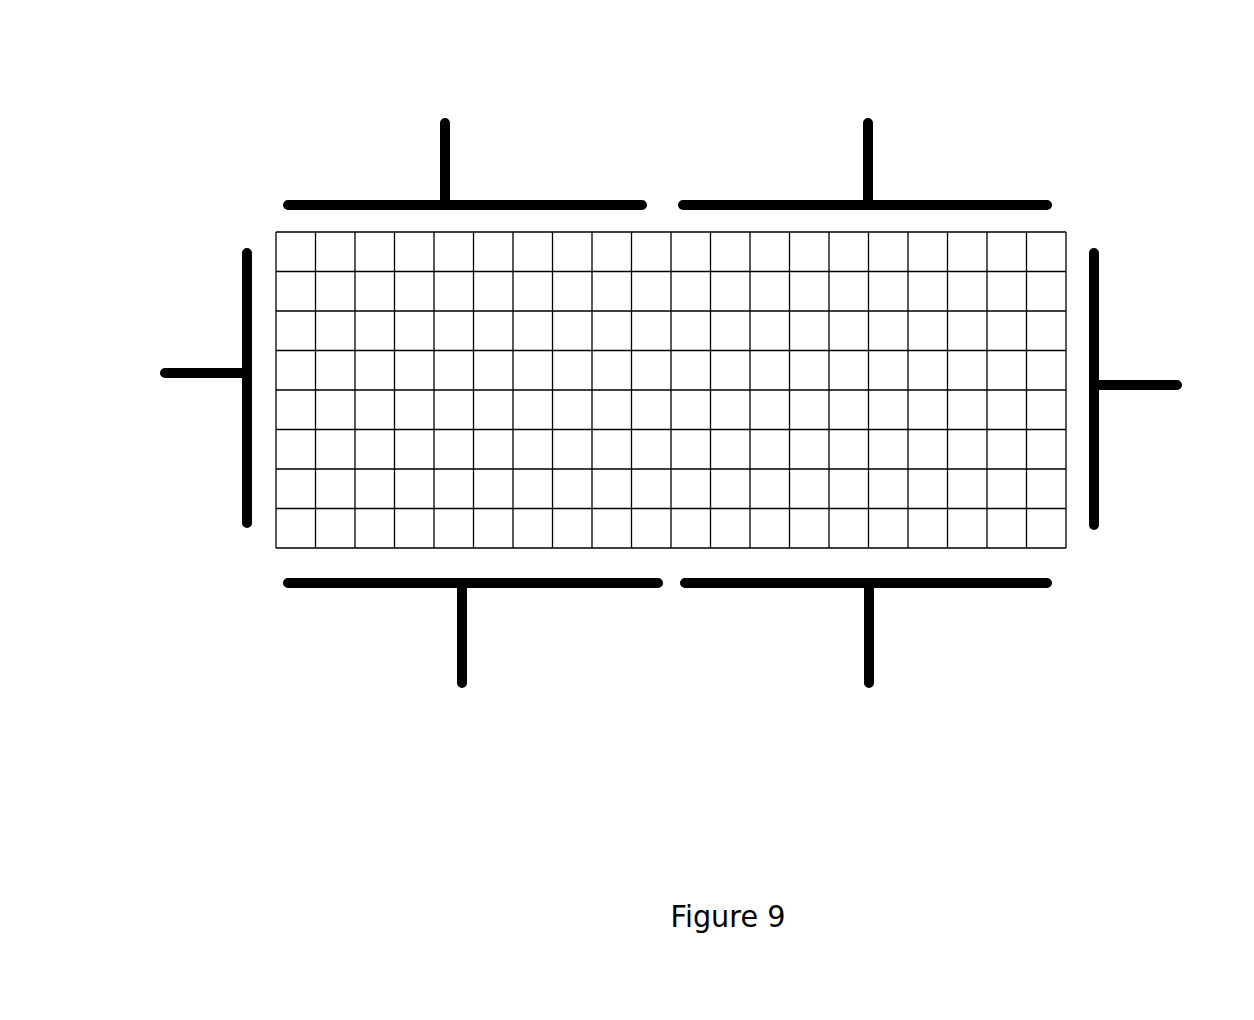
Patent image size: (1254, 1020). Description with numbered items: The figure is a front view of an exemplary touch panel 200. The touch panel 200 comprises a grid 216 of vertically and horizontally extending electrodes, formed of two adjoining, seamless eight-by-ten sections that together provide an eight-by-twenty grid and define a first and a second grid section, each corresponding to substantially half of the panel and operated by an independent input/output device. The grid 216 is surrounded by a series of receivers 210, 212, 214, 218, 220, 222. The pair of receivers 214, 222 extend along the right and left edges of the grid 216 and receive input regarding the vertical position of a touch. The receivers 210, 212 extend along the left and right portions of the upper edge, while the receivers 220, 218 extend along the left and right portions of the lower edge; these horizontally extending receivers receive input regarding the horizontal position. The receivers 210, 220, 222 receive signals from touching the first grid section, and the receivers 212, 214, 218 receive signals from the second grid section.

The touch panel 200 is at (236, 74).
The receiver 210 is at (450, 163).
The receiver 212 is at (877, 168).
The receiver 214 is at (1107, 480).
The grid 216 is at (1073, 559).
The receiver 218 is at (878, 648).
The receiver 220 is at (470, 660).
The receiver 222 is at (230, 468).